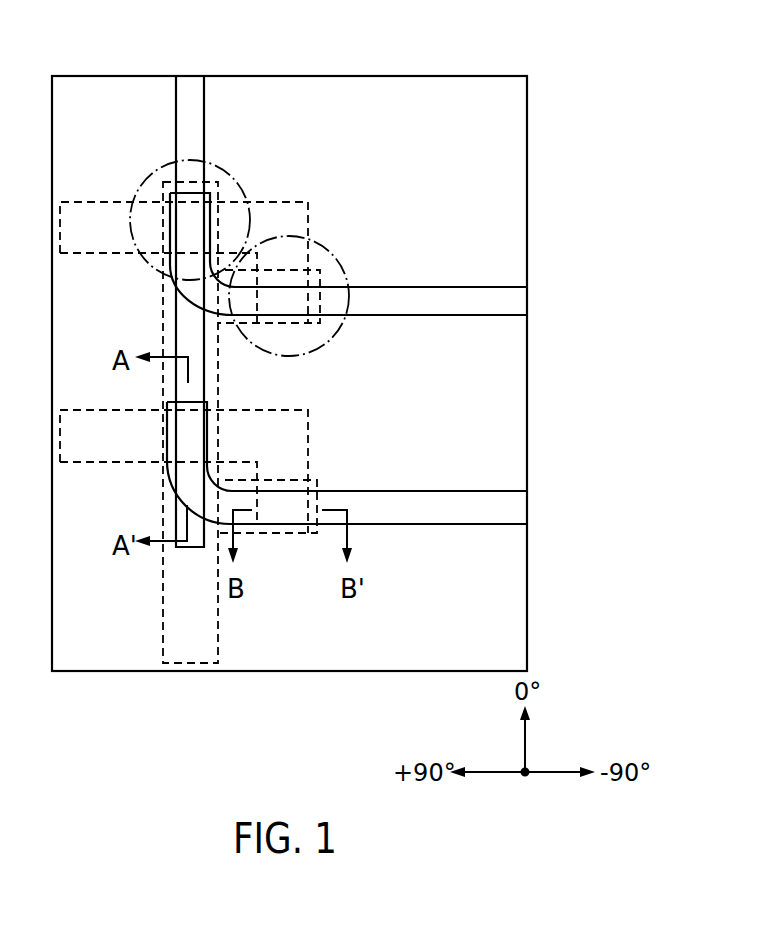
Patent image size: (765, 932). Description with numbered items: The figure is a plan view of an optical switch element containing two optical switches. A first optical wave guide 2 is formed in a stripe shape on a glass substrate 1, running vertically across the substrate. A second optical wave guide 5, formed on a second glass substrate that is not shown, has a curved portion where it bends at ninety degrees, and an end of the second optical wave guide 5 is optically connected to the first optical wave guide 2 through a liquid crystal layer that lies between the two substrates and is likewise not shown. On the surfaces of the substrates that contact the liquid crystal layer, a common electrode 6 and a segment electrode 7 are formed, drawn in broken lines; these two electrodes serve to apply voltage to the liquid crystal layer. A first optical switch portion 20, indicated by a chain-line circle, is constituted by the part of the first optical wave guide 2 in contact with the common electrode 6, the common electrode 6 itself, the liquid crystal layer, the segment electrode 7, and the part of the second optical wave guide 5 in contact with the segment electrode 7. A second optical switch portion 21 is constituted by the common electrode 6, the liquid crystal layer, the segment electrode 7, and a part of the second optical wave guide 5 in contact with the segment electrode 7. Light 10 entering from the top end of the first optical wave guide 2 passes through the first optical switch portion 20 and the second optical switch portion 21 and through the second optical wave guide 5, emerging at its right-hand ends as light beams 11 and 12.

The glass substrate 1 is at (518, 152).
The first optical wave guide 2 is at (204, 121).
The second optical wave guide 5 is at (458, 296).
The common electrode 6 is at (218, 610).
The segment electrode 7 is at (79, 199).
The light 10 is at (191, 62).
The light beam 11 is at (543, 300).
The light beam 12 is at (540, 511).
The first optical switch portion 20 is at (233, 177).
The second optical switch portion 21 is at (333, 253).